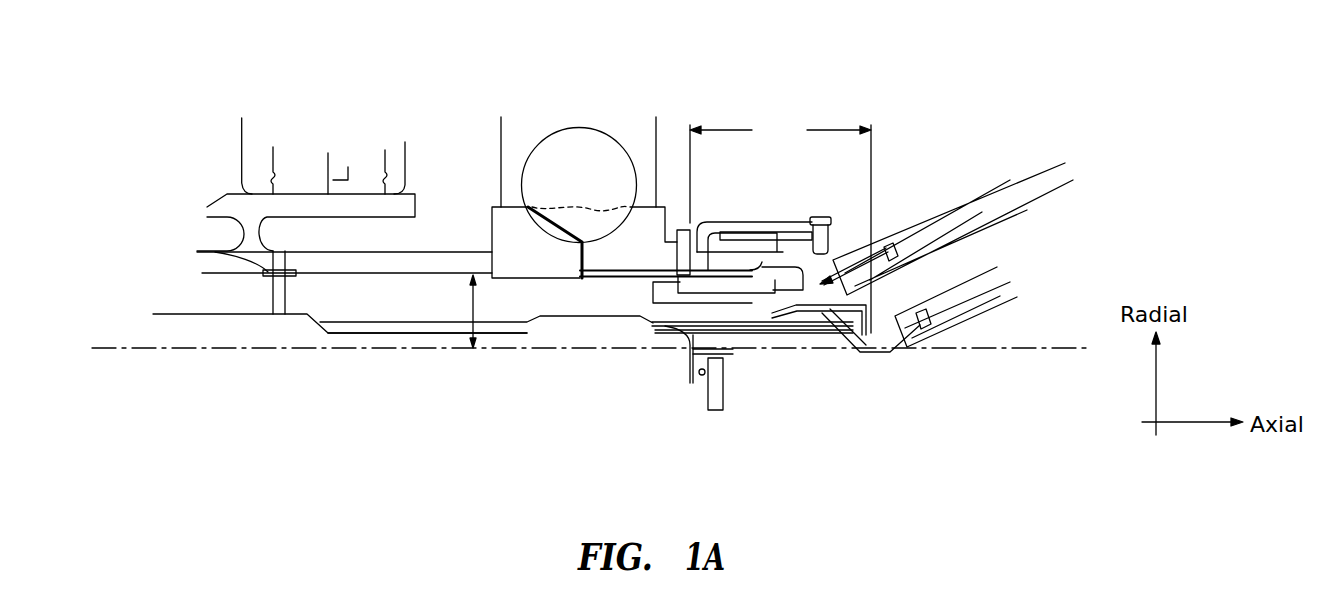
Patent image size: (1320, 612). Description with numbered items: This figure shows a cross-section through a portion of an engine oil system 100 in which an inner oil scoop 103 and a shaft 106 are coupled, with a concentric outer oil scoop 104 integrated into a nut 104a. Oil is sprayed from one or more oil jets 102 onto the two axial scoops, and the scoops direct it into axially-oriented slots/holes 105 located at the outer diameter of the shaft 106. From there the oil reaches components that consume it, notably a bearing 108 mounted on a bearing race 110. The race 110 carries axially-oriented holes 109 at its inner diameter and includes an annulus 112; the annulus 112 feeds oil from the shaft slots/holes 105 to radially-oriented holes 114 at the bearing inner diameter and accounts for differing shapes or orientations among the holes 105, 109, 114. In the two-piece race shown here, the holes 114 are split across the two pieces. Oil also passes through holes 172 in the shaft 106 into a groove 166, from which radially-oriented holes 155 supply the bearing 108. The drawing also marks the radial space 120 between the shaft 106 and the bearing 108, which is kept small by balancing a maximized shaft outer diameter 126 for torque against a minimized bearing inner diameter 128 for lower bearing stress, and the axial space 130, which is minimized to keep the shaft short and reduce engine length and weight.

The oil system 100 is at (1096, 94).
The oil jets 102 is at (965, 212).
The inner oil scoop 103 is at (872, 308).
The outer oil scoop 104 is at (790, 218).
The nut 104a is at (723, 262).
The slots/holes 105 is at (728, 325).
The shaft 106 is at (778, 340).
The bearing 108 is at (512, 205).
The holes 109 is at (640, 282).
The bearing race 110 is at (516, 247).
The annulus 112 is at (676, 236).
The holes 114 is at (580, 263).
The radial space 120 is at (470, 310).
The shaft outer diameter 126 is at (896, 354).
The bearing inner diameter 128 is at (355, 273).
The axial space 130 is at (780, 222).
The radially-oriented holes 155 is at (277, 250).
The groove 166 is at (222, 252).
The holes 172 is at (277, 297).